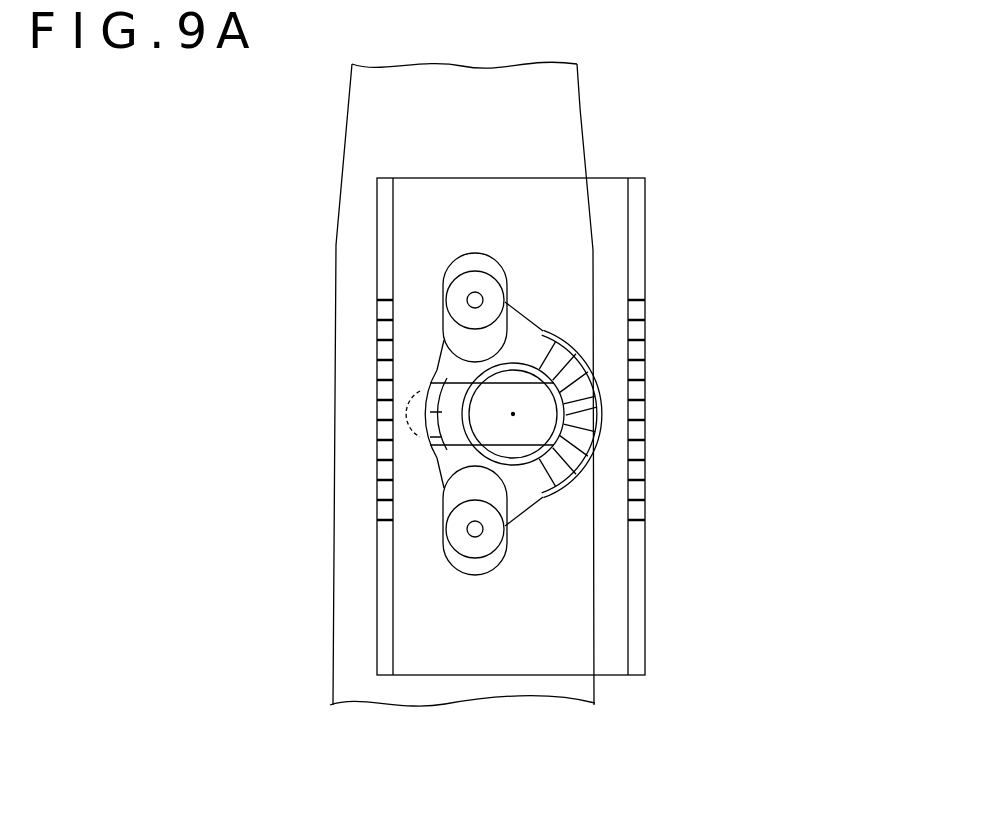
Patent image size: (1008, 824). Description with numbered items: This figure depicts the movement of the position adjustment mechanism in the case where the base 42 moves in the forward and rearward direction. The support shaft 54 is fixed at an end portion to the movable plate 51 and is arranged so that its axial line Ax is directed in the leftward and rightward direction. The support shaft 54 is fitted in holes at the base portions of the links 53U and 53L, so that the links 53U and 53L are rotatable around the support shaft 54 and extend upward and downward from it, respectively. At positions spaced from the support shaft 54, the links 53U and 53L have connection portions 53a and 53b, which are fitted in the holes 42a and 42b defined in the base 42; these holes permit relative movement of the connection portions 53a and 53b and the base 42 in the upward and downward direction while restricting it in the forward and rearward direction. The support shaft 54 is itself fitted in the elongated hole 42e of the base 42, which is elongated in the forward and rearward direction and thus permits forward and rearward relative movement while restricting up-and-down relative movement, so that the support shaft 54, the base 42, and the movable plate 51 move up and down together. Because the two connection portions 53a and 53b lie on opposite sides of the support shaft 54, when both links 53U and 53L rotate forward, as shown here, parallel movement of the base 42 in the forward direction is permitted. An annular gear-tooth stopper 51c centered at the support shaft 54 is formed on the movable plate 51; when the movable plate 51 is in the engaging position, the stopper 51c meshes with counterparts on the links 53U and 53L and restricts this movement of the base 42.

The base 42 is at (580, 118).
The movable plate 51 is at (645, 236).
The hole 42a is at (488, 252).
The connection portion 53a is at (490, 281).
The link 53U is at (530, 312).
The link 53L is at (522, 525).
The stopper 51c is at (602, 408).
The axial line Ax is at (513, 414).
The elongated hole 42e is at (424, 436).
The support shaft 54 is at (533, 448).
The connection portion 53b is at (497, 547).
The hole 42b is at (482, 578).